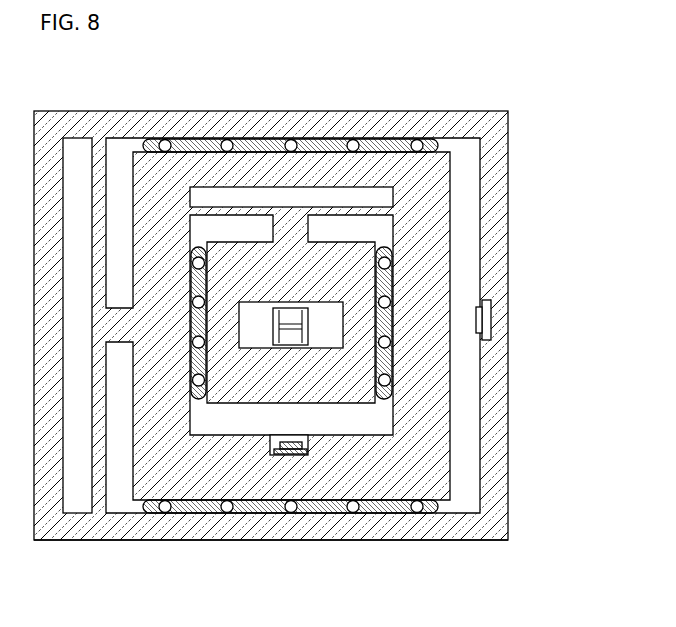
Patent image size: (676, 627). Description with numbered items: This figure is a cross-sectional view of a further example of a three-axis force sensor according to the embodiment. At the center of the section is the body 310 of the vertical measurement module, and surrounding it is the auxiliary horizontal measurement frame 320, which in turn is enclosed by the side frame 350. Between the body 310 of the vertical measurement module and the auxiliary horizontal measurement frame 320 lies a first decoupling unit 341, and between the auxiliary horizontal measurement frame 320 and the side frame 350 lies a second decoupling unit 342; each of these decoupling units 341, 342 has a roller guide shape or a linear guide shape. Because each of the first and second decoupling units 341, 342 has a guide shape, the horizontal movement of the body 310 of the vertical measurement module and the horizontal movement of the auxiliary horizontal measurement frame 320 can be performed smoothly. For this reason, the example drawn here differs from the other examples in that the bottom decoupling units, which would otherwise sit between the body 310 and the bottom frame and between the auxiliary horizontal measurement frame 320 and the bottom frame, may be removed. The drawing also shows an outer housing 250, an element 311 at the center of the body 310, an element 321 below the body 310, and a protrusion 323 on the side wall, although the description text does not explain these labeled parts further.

The housing 250 is at (492, 196).
The body of the vertical measurement module 310 is at (235, 385).
The magnet 311 is at (293, 308).
The auxiliary horizontal measurement frame 320 is at (162, 472).
The stopper 321 is at (284, 455).
The protrusion 323 is at (489, 320).
The first decoupling unit 341 is at (395, 362).
The second decoupling unit 342 is at (385, 148).
The side frame 350 is at (430, 527).